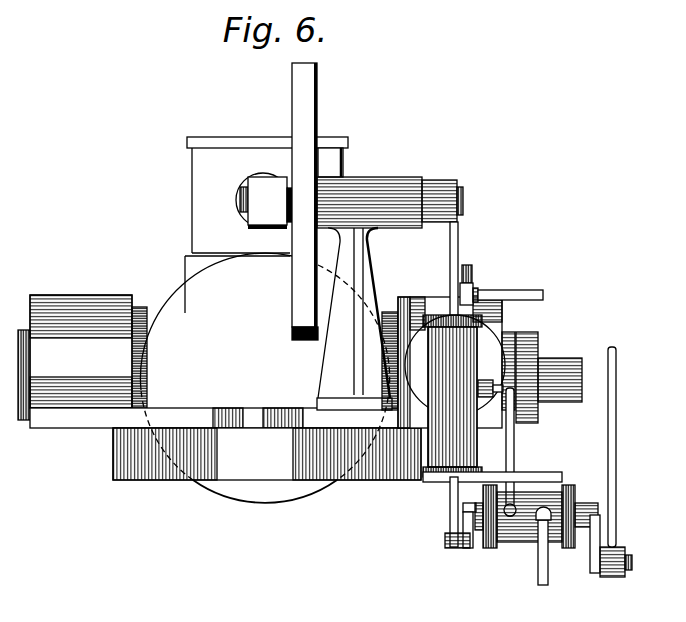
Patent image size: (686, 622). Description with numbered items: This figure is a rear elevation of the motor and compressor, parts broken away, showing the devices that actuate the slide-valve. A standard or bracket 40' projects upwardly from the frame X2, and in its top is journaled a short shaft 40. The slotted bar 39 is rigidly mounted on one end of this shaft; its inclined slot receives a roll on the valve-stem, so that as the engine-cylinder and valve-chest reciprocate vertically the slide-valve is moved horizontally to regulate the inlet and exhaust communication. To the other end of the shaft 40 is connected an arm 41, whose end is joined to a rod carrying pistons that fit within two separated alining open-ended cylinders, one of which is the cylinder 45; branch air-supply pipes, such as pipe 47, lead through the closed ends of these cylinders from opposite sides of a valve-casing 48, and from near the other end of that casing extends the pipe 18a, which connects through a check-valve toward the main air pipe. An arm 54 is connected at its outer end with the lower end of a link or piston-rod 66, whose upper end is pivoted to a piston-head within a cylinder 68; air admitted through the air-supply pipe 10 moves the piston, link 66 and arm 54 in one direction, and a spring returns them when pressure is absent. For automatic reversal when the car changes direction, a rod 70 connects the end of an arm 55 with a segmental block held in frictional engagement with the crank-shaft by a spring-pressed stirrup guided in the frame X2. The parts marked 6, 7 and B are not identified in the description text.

The bracket 6 is at (266, 225).
The shaft 7 is at (560, 362).
The air-supply pipe 10 is at (472, 270).
The pipe 18a is at (548, 582).
The slotted bar 39 is at (312, 105).
The short shaft 40 is at (247, 209).
The standard or bracket 40' is at (363, 319).
The arm 41 is at (459, 238).
The open-ended cylinder 45 is at (490, 337).
The branch air-supply pipe 47 is at (514, 452).
The valve-casing 48 is at (518, 543).
The arm 54 is at (466, 549).
The arm 55 is at (597, 574).
The link or piston-rod 66 is at (448, 512).
The cylinder 68 is at (452, 396).
The rod 70 is at (618, 447).
The wheel B is at (216, 321).
The frame X2 is at (267, 454).